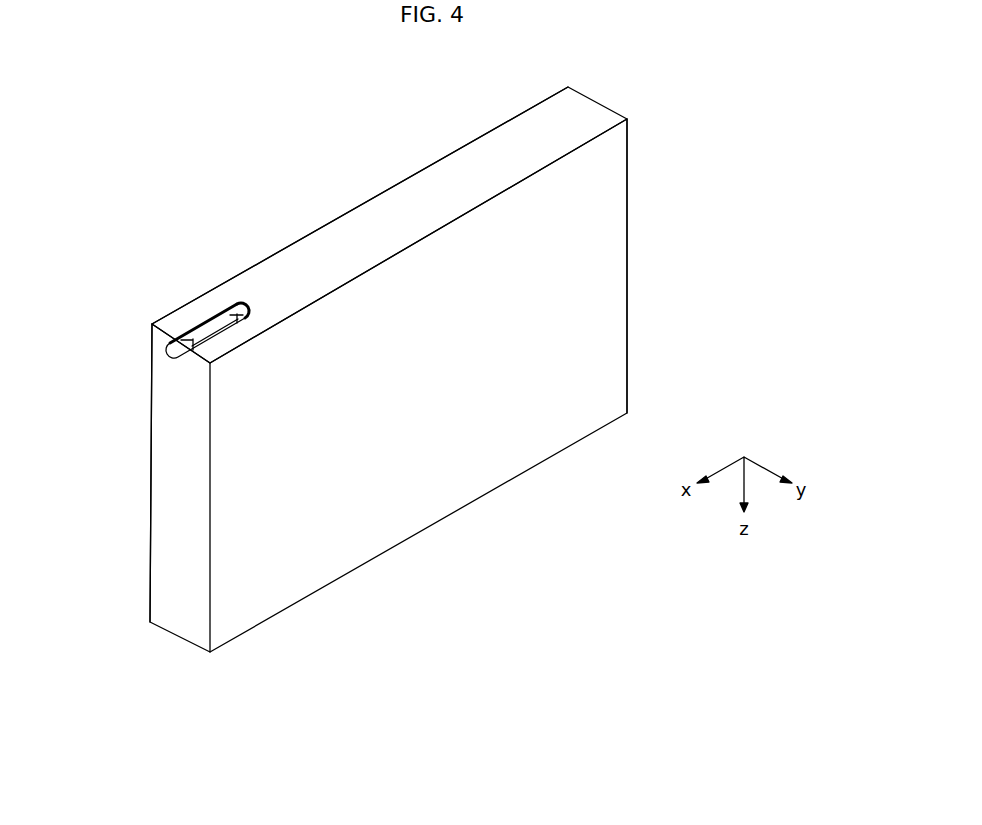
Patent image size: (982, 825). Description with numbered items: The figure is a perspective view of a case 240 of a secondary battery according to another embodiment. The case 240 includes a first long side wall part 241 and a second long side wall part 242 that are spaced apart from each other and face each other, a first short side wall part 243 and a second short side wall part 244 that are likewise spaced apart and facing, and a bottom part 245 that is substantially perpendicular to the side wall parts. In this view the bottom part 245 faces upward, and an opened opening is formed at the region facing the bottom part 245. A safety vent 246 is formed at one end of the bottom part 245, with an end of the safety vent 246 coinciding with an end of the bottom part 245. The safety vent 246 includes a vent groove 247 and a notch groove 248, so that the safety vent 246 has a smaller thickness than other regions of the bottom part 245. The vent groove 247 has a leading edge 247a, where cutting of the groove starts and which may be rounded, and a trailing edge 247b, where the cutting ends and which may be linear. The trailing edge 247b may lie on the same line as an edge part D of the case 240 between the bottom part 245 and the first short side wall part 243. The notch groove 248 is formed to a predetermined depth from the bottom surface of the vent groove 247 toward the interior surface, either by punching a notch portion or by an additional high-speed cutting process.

The case 240 is at (386, 344).
The first long side wall part 241 is at (420, 518).
The second long side wall part 242 is at (483, 131).
The first short side wall part 243 is at (155, 541).
The second short side wall part 244 is at (629, 263).
The bottom part 245 is at (590, 115).
The safety vent 246 is at (164, 302).
The vent groove 247 is at (170, 342).
The leading edge 247a is at (250, 312).
The trailing edge 247b is at (178, 352).
The notch groove 248 is at (194, 322).
The edge part D is at (183, 341).